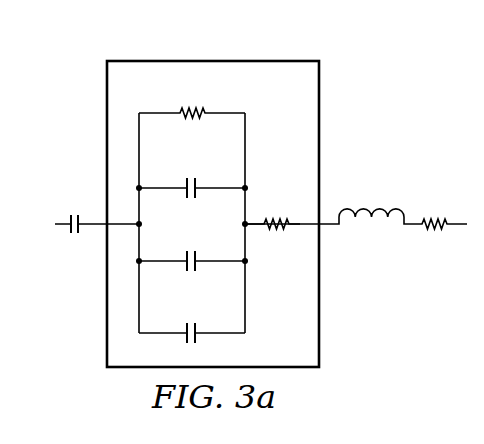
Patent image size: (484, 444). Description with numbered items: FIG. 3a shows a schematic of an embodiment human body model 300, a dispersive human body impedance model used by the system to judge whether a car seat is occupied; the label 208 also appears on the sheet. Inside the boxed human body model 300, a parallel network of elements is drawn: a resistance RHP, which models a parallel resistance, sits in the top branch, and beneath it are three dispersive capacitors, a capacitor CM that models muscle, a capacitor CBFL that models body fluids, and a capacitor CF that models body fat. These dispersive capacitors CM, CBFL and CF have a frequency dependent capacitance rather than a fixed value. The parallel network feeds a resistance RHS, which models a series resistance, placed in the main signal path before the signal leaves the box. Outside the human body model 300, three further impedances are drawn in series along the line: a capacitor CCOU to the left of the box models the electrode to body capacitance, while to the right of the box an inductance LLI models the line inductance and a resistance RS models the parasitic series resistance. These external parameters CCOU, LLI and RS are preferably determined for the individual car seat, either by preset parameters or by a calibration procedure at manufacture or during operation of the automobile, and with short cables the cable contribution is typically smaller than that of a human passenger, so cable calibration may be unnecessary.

The human body model 300 is at (133, 55).
The circuit model 208 is at (256, 183).
The parallel resistance RHP is at (192, 98).
The dispersive capacitor modeling muscle CM is at (192, 172).
The dispersive capacitor modeling body fluids CBFL is at (192, 245).
The dispersive capacitor modeling body fat CF is at (192, 319).
The series resistance RHS is at (272, 208).
The electrode to body capacitance CCOU is at (76, 209).
The line inductance LLI is at (365, 201).
The parasitic series resistance RS is at (439, 209).